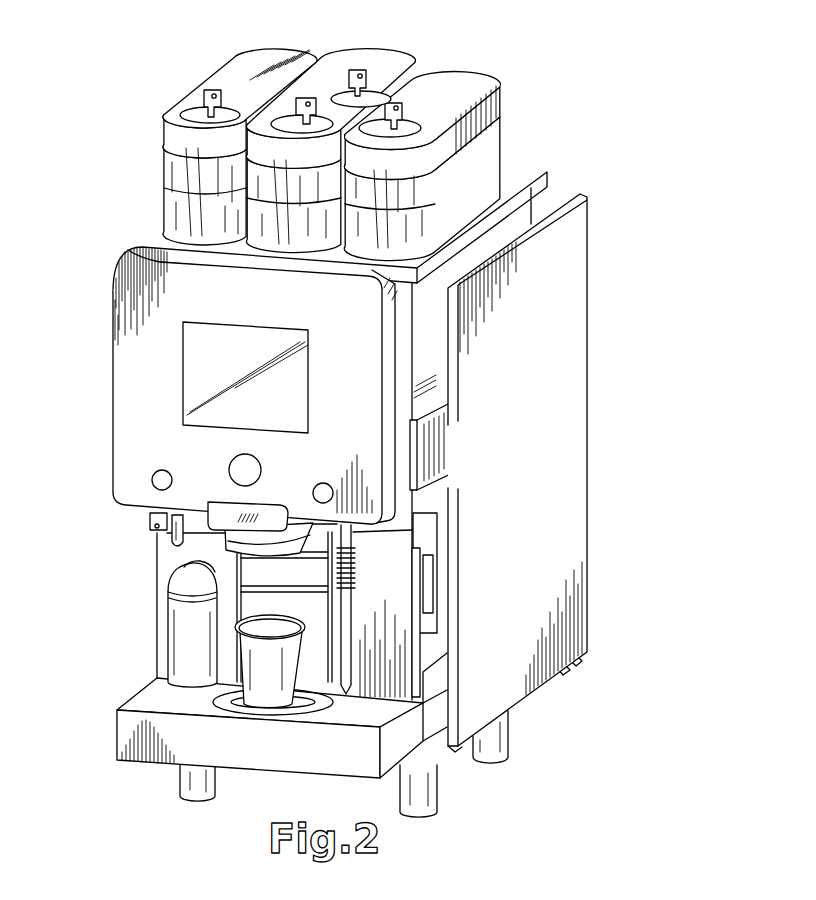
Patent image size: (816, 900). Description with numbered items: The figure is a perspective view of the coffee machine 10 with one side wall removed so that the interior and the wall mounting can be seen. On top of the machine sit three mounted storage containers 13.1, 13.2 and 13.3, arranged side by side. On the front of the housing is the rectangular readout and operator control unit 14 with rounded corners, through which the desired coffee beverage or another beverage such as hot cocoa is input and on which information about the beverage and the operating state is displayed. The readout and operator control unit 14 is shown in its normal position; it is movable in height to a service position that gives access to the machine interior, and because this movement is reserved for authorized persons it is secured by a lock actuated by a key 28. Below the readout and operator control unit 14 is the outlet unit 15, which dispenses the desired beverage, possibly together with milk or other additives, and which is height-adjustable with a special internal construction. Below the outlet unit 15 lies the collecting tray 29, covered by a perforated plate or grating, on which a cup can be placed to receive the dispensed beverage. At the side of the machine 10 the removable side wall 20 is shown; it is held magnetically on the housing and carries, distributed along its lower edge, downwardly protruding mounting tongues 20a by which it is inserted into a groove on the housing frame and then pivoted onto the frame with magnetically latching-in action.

The coffee machine 10 is at (615, 390).
The storage container 13.1 is at (187, 185).
The storage container 13.2 is at (305, 187).
The storage container 13.3 is at (473, 157).
The readout and operator control unit 14 is at (160, 313).
The outlet unit 15 is at (242, 530).
The side wall 20 is at (560, 518).
The mounting tongues 20a is at (460, 745).
The key 28 is at (150, 522).
The collecting tray 29 is at (125, 740).